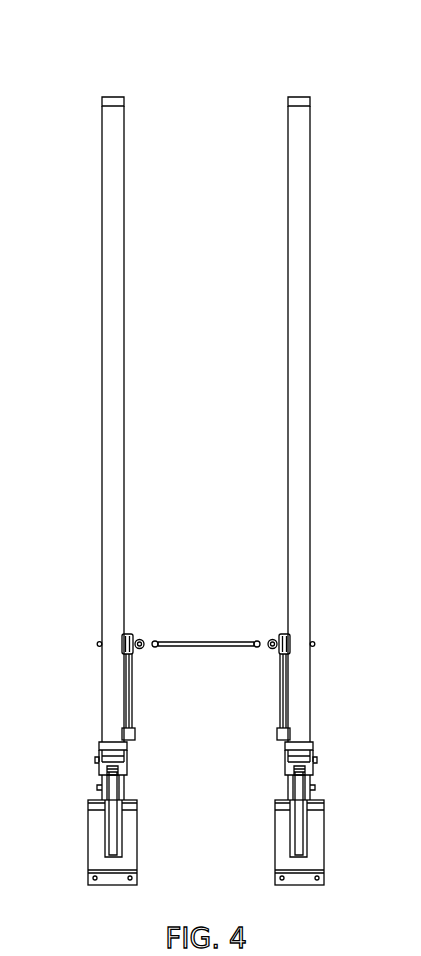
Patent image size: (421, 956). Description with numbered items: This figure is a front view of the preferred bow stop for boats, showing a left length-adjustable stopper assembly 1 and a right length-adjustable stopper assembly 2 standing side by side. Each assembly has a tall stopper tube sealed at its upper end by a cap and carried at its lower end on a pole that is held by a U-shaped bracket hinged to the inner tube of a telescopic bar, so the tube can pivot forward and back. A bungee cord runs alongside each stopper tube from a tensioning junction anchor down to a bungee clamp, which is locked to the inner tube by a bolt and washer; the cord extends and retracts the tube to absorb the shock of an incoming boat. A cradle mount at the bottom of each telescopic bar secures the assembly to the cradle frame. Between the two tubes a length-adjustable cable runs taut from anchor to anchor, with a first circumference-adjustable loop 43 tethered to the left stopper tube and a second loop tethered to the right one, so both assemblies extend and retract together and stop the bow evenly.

The left length-adjustable stopper assembly 1 is at (72, 465).
The right length-adjustable stopper assembly 2 is at (300, 467).
The first circumference-adjustable loop 43 is at (144, 648).